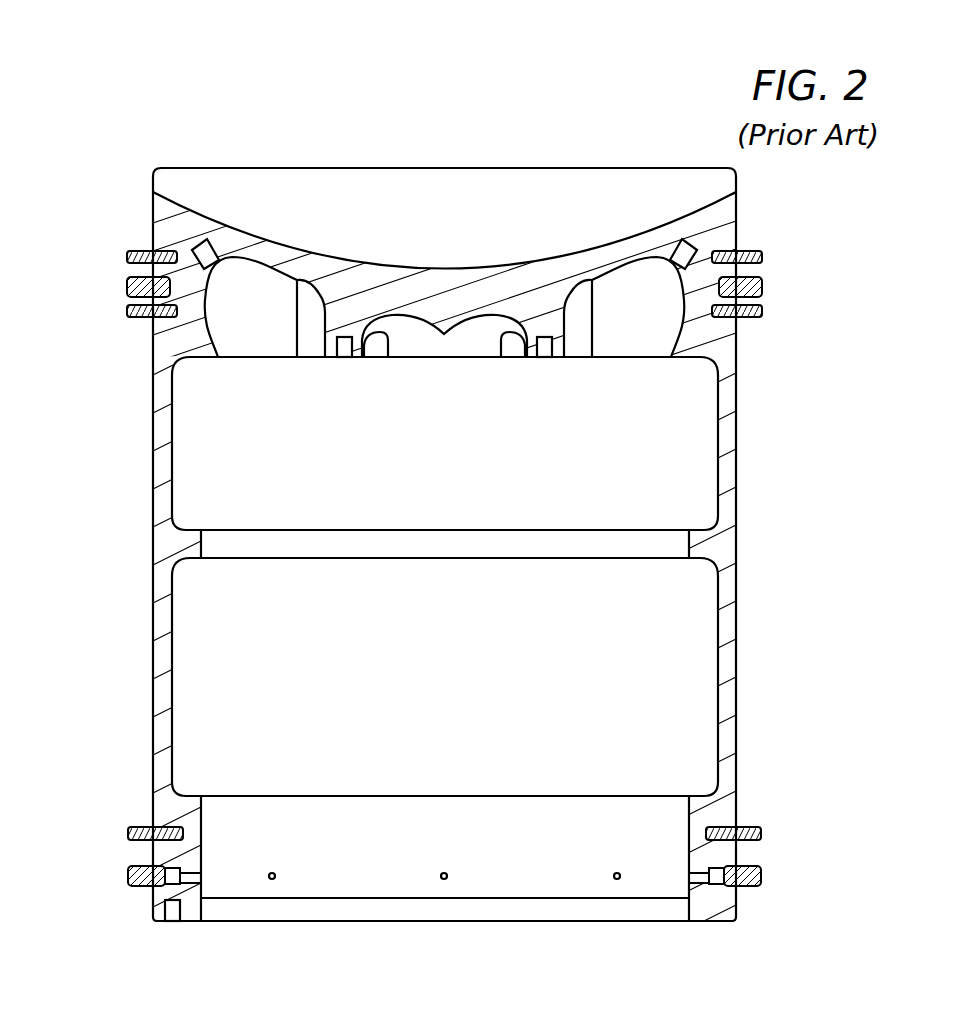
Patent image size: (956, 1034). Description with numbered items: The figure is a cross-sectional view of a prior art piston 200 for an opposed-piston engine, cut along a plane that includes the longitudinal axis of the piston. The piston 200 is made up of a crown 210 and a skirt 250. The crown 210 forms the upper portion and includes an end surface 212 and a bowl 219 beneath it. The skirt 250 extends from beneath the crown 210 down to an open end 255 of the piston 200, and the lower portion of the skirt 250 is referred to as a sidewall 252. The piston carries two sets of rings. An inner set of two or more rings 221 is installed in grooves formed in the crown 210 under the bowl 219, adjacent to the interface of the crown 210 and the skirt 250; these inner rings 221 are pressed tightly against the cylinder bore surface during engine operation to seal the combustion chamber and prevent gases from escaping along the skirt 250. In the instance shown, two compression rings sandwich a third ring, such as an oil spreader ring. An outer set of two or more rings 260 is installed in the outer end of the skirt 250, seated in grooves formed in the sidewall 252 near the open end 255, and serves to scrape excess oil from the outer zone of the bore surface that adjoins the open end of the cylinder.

The piston 200 is at (205, 95).
The crown 210 is at (772, 165).
The end surface 212 is at (207, 190).
The bowl 219 is at (462, 233).
The inner rings 221 is at (127, 311).
The skirt 250 is at (772, 924).
The sidewall 252 is at (153, 695).
The open end 255 is at (690, 910).
The outer rings 260 is at (128, 876).